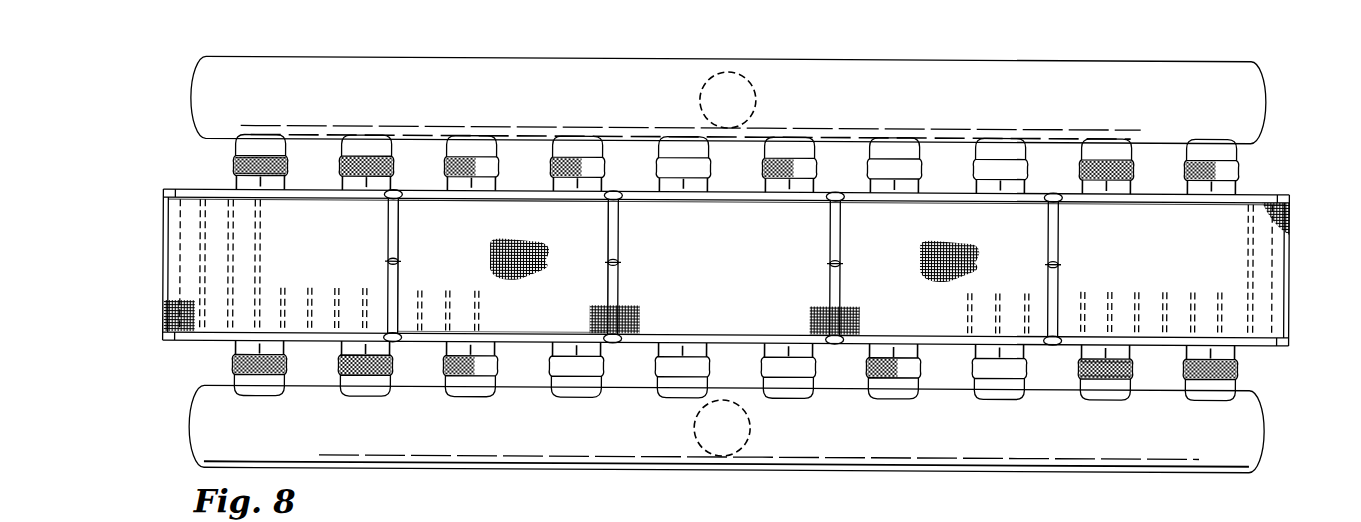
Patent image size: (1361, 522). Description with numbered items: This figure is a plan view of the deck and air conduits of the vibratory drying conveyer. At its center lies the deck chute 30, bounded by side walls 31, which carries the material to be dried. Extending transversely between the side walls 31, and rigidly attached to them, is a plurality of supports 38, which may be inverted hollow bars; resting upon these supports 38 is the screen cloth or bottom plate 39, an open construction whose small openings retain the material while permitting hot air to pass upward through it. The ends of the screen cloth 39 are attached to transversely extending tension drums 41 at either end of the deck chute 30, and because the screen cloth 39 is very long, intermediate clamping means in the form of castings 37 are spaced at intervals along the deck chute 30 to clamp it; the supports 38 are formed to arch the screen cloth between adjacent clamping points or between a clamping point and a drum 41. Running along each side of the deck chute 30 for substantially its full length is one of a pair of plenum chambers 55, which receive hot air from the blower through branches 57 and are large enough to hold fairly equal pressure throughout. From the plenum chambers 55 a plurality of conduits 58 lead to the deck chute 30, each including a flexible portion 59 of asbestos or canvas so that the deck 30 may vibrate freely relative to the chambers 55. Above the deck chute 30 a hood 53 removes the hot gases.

The deck chute 30 is at (726, 267).
The side walls 31 is at (438, 194).
The clamping means castings 37 is at (620, 247).
The screen cloth or bottom plate supports 38 is at (1192, 290).
The screen cloth or bottom plate 39 is at (515, 280).
The tension drums 41 is at (165, 222).
The hood 53 is at (790, 520).
The plenum chambers 55 is at (918, 85).
The branches 57 is at (737, 74).
The conduits 58 is at (380, 143).
The flexible portion 59 is at (386, 166).